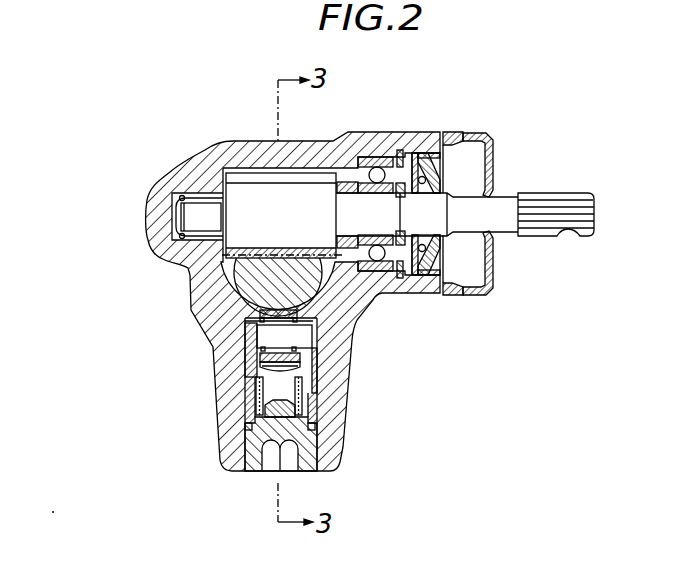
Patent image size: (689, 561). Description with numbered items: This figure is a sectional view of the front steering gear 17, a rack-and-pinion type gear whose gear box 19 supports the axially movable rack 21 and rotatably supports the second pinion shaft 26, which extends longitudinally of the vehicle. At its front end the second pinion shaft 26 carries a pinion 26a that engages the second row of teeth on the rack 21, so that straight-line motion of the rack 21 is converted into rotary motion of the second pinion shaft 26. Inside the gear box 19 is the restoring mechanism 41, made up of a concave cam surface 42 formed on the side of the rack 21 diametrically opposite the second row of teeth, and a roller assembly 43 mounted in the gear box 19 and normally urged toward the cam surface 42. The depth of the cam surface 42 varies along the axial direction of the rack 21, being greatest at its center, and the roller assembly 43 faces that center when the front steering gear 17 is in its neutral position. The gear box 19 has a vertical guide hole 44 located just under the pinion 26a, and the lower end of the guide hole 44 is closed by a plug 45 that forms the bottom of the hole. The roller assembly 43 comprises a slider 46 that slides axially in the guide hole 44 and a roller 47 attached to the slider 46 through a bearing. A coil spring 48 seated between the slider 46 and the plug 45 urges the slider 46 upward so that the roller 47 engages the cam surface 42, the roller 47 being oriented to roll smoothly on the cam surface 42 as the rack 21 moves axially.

The front steering gear 17 is at (122, 232).
The gear box 19 is at (202, 163).
The rack 21 is at (276, 280).
The second pinion shaft 26 is at (494, 210).
The pinion 26a is at (300, 197).
The restoring mechanism 41 is at (212, 319).
The cam surface 42 is at (320, 313).
The roller assembly 43 is at (343, 355).
The guide hole 44 is at (310, 410).
The plug 45 is at (309, 460).
The slider 46 is at (302, 366).
The roller 47 is at (255, 386).
The coil spring 48 is at (245, 426).